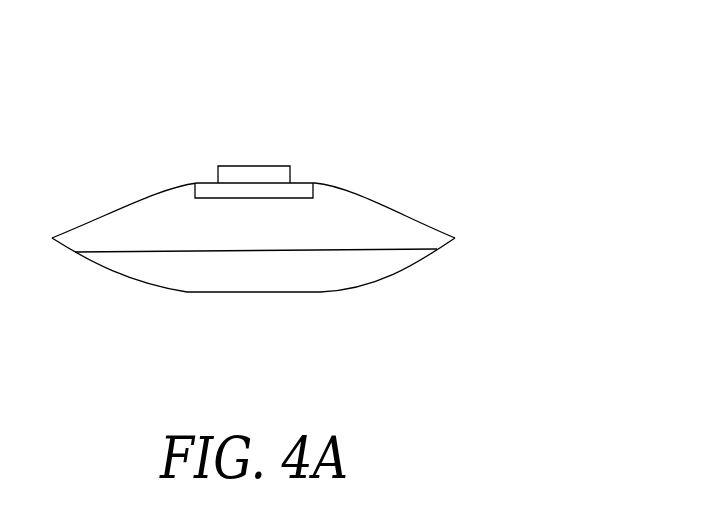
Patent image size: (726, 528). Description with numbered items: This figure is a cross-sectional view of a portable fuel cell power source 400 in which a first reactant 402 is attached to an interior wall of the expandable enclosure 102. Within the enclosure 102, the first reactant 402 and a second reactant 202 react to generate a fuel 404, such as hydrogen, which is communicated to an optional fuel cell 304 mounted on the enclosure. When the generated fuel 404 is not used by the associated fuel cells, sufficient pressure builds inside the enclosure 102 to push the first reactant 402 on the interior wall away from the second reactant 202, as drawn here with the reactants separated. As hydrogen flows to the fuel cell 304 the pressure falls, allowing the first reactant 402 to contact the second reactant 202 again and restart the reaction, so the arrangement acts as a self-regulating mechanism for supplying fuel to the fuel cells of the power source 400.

The portable fuel cell power source 400 is at (548, 43).
The expandable enclosure 102 is at (372, 200).
The second reactant 202 is at (353, 271).
The fuel 404 is at (118, 224).
The first reactant 402 is at (195, 187).
The fuel cell 304 is at (272, 166).